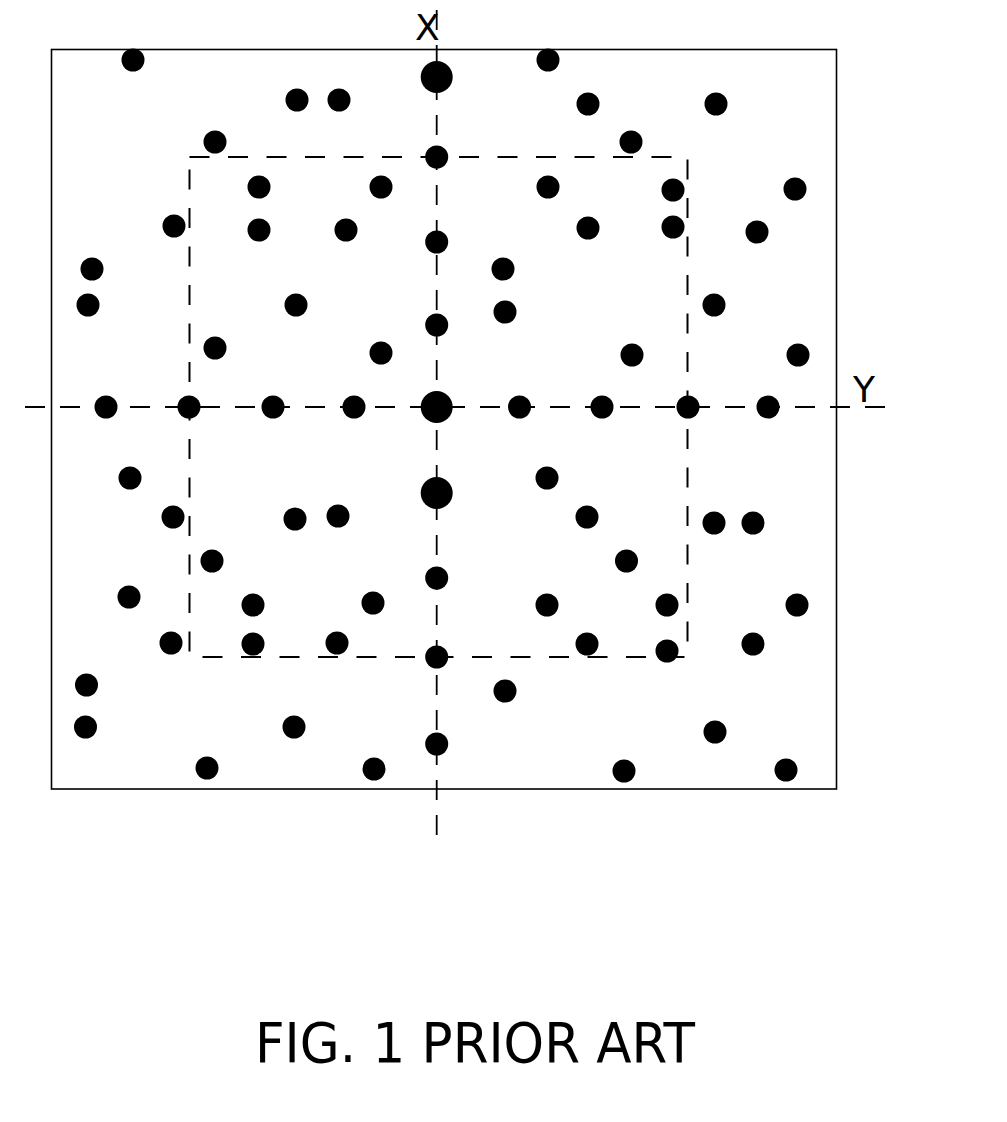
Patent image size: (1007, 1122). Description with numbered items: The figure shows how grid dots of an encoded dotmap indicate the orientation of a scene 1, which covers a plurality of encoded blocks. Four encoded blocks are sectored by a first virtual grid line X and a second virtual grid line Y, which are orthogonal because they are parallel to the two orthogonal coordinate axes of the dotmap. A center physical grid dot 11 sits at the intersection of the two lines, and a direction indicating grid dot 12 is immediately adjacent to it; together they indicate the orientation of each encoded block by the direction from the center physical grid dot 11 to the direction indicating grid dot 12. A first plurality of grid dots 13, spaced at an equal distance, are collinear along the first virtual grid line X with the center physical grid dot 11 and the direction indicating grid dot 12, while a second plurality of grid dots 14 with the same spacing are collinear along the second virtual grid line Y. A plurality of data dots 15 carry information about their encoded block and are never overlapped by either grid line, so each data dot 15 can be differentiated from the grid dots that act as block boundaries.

The scene 1 is at (688, 440).
The center physical grid dot 11 is at (447, 392).
The direction indicating grid dot 12 is at (444, 506).
The first plurality of grid dots 13 is at (434, 164).
The second plurality of grid dots 14 is at (350, 408).
The data dots 15 is at (362, 603).